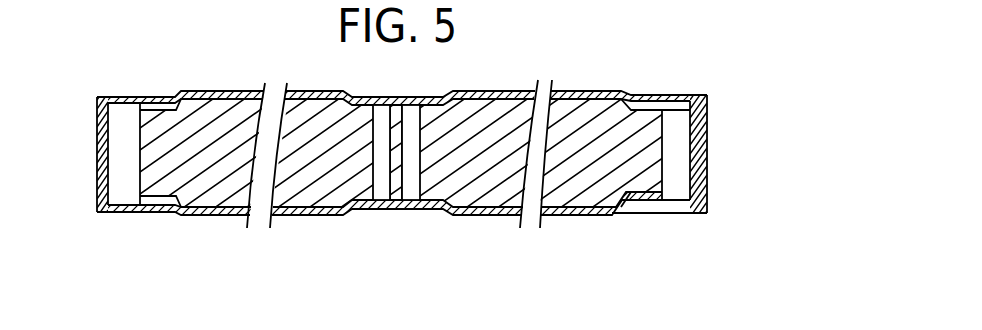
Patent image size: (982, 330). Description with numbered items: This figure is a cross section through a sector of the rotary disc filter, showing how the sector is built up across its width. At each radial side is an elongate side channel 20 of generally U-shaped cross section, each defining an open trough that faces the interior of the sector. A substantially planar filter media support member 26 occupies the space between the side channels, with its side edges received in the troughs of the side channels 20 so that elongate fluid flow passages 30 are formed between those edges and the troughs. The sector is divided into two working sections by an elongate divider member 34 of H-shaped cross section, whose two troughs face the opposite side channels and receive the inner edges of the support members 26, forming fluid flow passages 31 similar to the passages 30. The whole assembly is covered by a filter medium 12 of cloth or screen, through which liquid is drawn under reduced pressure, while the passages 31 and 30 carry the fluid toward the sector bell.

The filter medium 12 is at (247, 92).
The side channels 20 is at (97, 138).
The filter media support member 26 is at (212, 128).
The fluid flow passages 30 is at (125, 130).
The fluid flow passages 31 is at (382, 96).
The divider member 34 is at (406, 96).